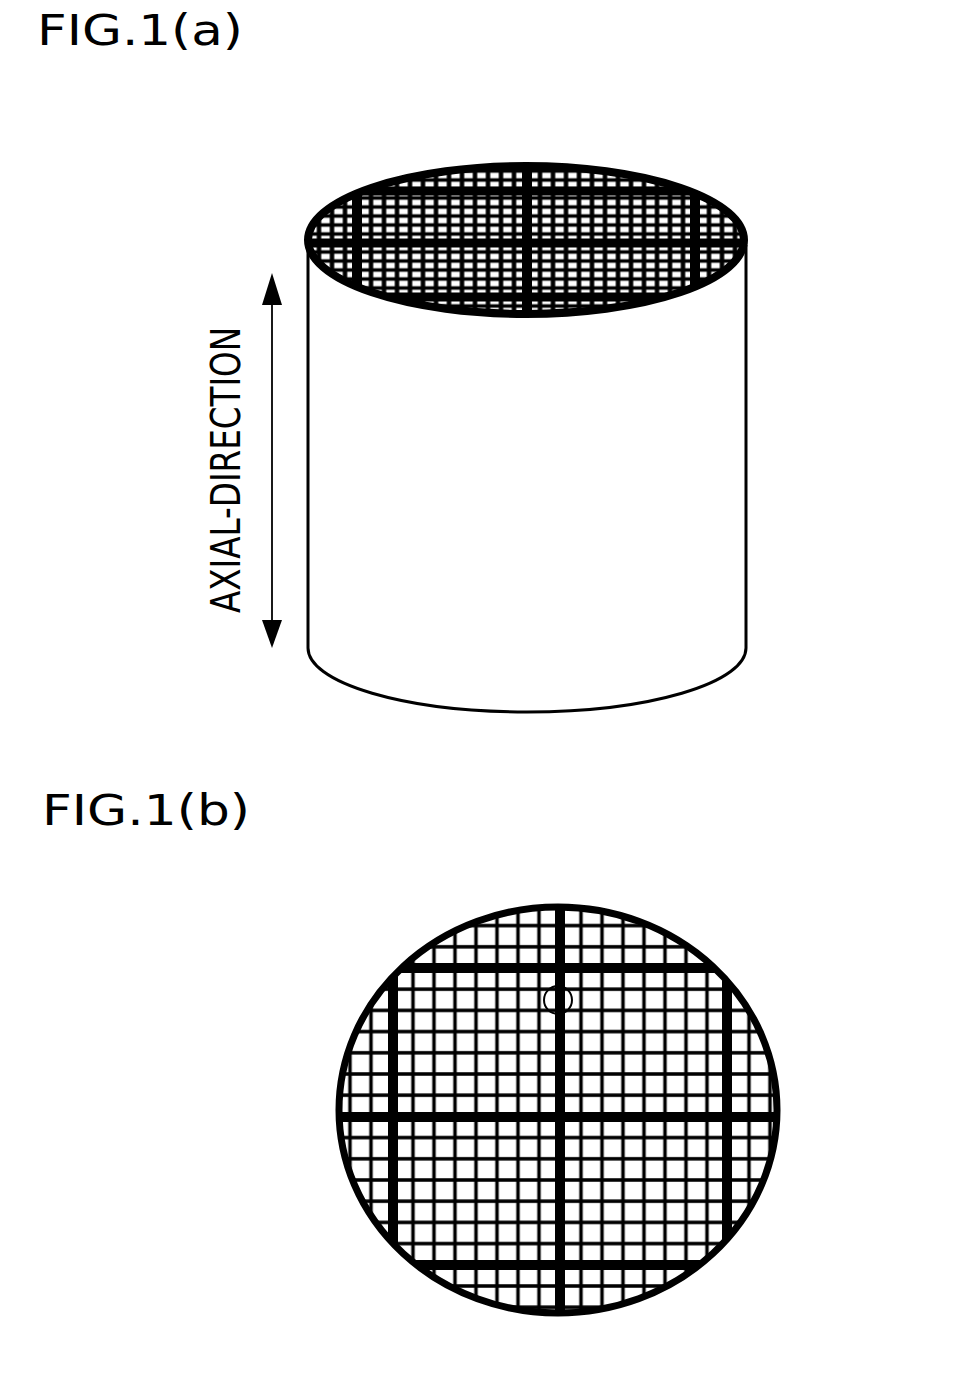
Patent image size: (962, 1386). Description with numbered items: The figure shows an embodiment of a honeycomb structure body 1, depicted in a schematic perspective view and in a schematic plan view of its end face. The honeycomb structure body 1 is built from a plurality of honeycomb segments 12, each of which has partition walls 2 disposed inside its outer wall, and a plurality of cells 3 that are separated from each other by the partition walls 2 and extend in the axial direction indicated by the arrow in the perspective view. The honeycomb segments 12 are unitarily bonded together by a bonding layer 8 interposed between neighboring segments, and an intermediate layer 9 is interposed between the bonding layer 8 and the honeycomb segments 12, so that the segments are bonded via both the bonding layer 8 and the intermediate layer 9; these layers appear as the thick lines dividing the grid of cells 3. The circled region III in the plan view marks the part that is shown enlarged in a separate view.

In FIG. 1A, the honeycomb structure 1 is at (648, 122).
In FIG. 1B, the partition walls 2 is at (423, 1077).
In FIG. 1B, the cells 3 is at (421, 1077).
In FIG. 1A, the bonding layer 8 is at (594, 240).
In FIG. 1B, the bonding layer 8 is at (561, 1124).
In FIG. 1A, the intermediate layer 9 is at (732, 212).
In FIG. 1B, the intermediate layer 9 is at (647, 1277).
In FIG. 1A, the honeycomb segments 12 is at (692, 186).
In FIG. 1B, the III part III is at (565, 986).